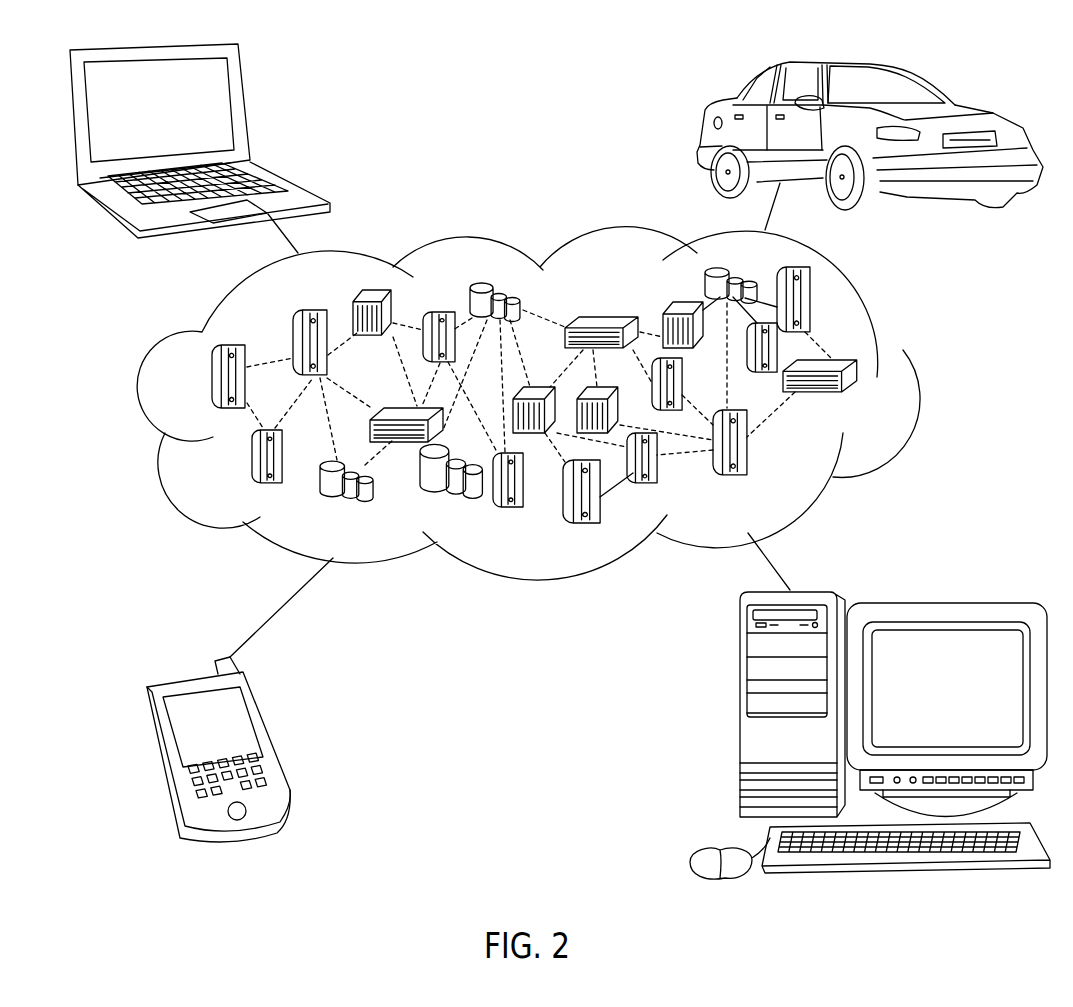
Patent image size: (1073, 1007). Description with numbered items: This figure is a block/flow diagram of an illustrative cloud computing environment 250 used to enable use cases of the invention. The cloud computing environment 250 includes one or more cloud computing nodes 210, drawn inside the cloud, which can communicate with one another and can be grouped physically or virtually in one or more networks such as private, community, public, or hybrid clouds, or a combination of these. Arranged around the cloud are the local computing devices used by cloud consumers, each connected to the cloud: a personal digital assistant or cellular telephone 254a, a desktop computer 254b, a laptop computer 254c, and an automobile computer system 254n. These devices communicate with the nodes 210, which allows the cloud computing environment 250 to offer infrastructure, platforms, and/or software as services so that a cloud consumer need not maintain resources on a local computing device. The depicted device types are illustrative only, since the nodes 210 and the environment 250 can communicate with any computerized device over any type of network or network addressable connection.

The cloud computing nodes 210 is at (880, 398).
The cloud computing environment 250 is at (903, 320).
The personal digital assistant (PDA) or cellular telephone 254a is at (270, 724).
The desktop computer 254b is at (737, 717).
The laptop computer 254c is at (243, 102).
The automobile computer system 254n is at (708, 112).